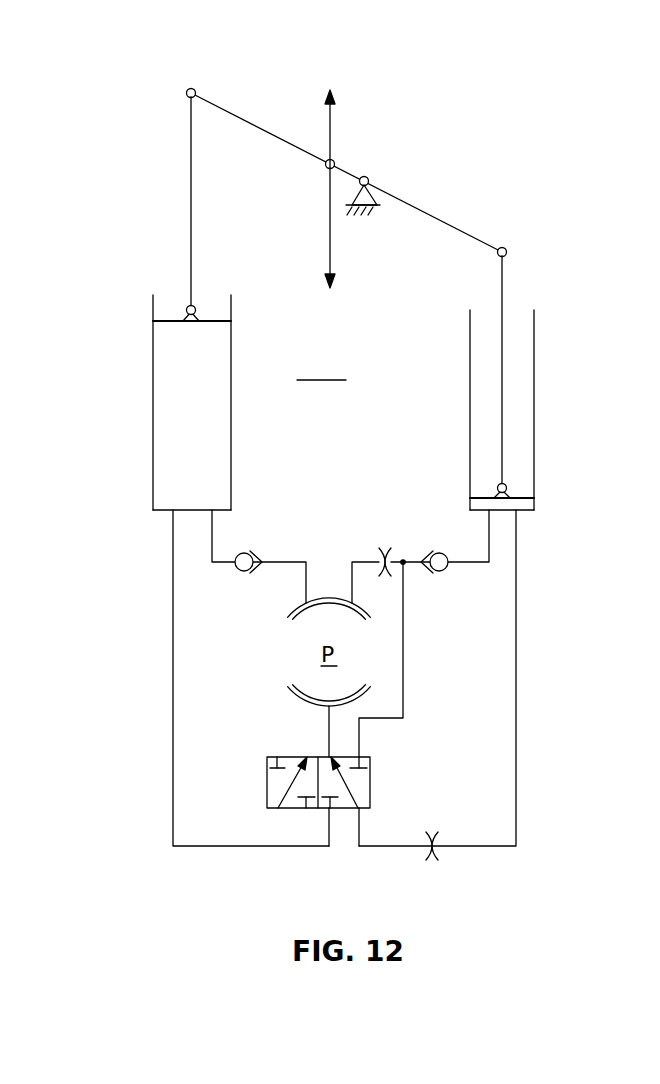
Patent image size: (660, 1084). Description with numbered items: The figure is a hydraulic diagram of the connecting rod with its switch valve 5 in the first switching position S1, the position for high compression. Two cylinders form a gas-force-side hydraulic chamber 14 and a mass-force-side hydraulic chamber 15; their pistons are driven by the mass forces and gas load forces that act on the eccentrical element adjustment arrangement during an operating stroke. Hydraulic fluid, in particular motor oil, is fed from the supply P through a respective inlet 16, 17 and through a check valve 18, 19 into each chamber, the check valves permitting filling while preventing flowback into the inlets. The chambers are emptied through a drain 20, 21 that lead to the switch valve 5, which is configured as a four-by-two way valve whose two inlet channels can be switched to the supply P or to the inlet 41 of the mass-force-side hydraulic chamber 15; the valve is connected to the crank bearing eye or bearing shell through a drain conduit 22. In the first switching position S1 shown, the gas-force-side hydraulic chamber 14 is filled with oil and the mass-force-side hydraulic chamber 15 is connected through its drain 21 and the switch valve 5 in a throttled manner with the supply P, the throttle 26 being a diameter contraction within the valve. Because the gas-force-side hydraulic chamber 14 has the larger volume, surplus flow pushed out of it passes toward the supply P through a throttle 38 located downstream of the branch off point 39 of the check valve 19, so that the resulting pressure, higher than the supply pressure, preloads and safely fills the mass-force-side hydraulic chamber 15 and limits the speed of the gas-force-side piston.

The first switching position S1 is at (552, 165).
The GKS hydraulic chamber 14 is at (173, 417).
The MKS hydraulic chamber 15 is at (518, 421).
The inlet 16 is at (291, 560).
The inlet 17 is at (362, 560).
The check valve 18 is at (243, 571).
The check valve 19 is at (446, 571).
The drain 20 is at (170, 683).
The drain 21 is at (520, 641).
The drain conduit 22 is at (327, 731).
The throttle 26 is at (437, 836).
The throttle 38 is at (393, 553).
The branch off point 39 is at (405, 567).
The inlet 41 is at (405, 654).
The switch valve 5 is at (396, 766).